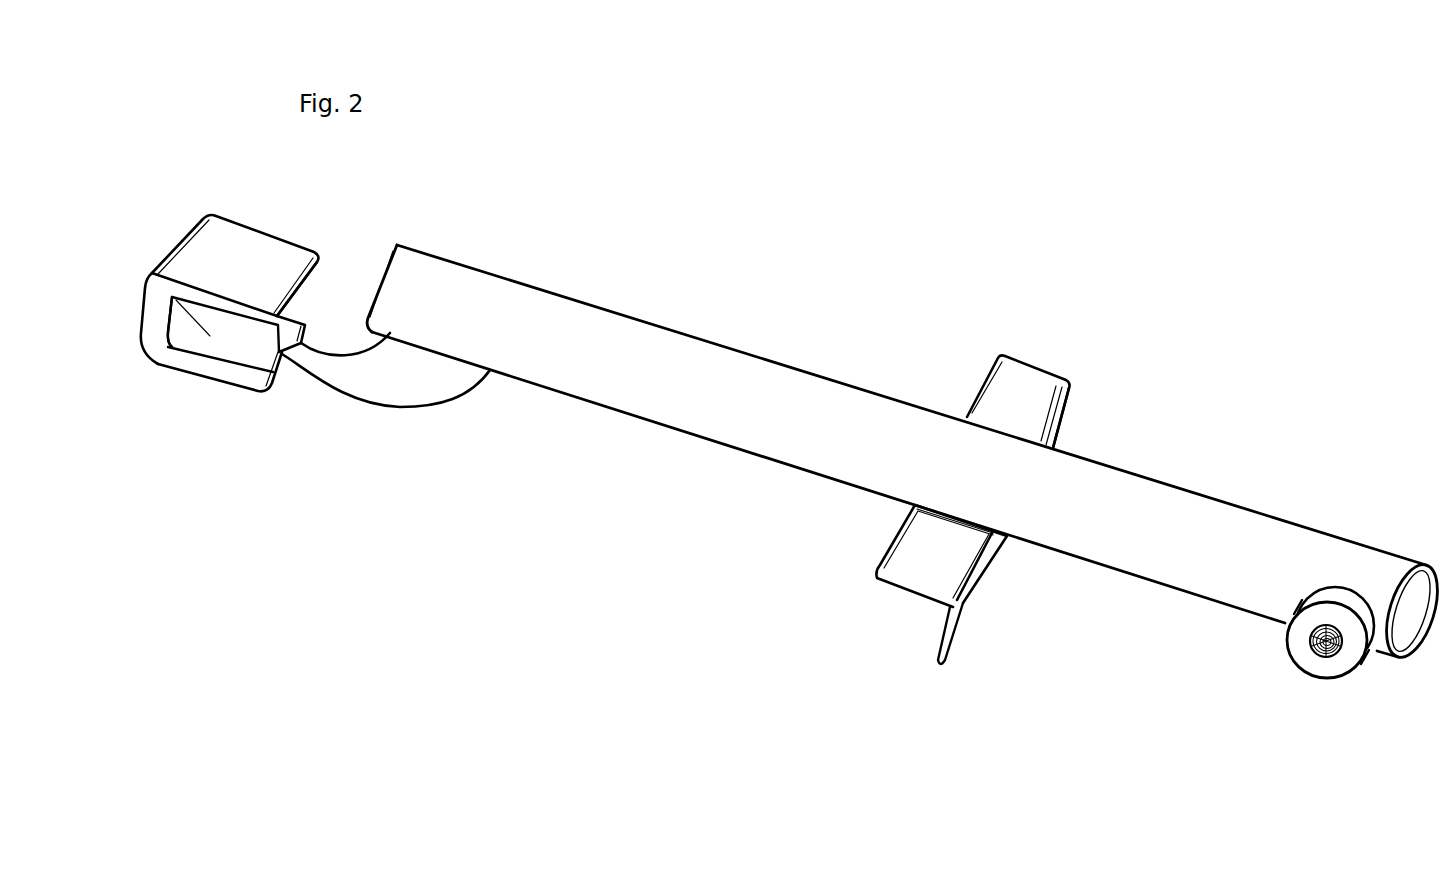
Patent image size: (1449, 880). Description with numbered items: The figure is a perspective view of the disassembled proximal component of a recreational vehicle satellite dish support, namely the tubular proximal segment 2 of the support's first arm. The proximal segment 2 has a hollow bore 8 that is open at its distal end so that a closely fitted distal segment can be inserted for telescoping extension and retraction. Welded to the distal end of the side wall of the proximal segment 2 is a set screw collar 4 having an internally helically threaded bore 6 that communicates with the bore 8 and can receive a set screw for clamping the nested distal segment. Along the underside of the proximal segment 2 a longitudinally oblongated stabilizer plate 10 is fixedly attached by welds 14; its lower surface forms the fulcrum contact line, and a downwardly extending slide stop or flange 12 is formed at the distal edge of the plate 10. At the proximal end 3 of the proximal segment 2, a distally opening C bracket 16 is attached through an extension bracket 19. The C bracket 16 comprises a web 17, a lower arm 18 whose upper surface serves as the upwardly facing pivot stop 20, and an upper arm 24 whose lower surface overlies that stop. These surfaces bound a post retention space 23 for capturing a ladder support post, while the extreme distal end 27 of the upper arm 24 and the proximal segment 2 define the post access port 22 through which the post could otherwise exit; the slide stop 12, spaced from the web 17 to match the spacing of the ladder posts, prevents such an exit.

The proximal segment 2 is at (749, 370).
The proximal end 3 is at (428, 265).
The set screw collar 4 is at (1300, 643).
The internally helically threaded bore 6 is at (1325, 650).
The hollow bore 8 is at (1420, 613).
The stabilizer plate 10 is at (1017, 388).
The slide stop or flange 12 is at (1057, 425).
The welds 14 is at (932, 513).
The C bracket 16 is at (228, 303).
The web 17 is at (150, 312).
The lower arm 18 is at (237, 387).
The extension bracket 19 is at (375, 387).
The upwardly facing pivot stop 20 is at (247, 349).
The post access port 22 is at (333, 315).
The post retention space 23 is at (215, 335).
The upper arm 24 is at (244, 250).
The extreme distal end 27 is at (323, 262).